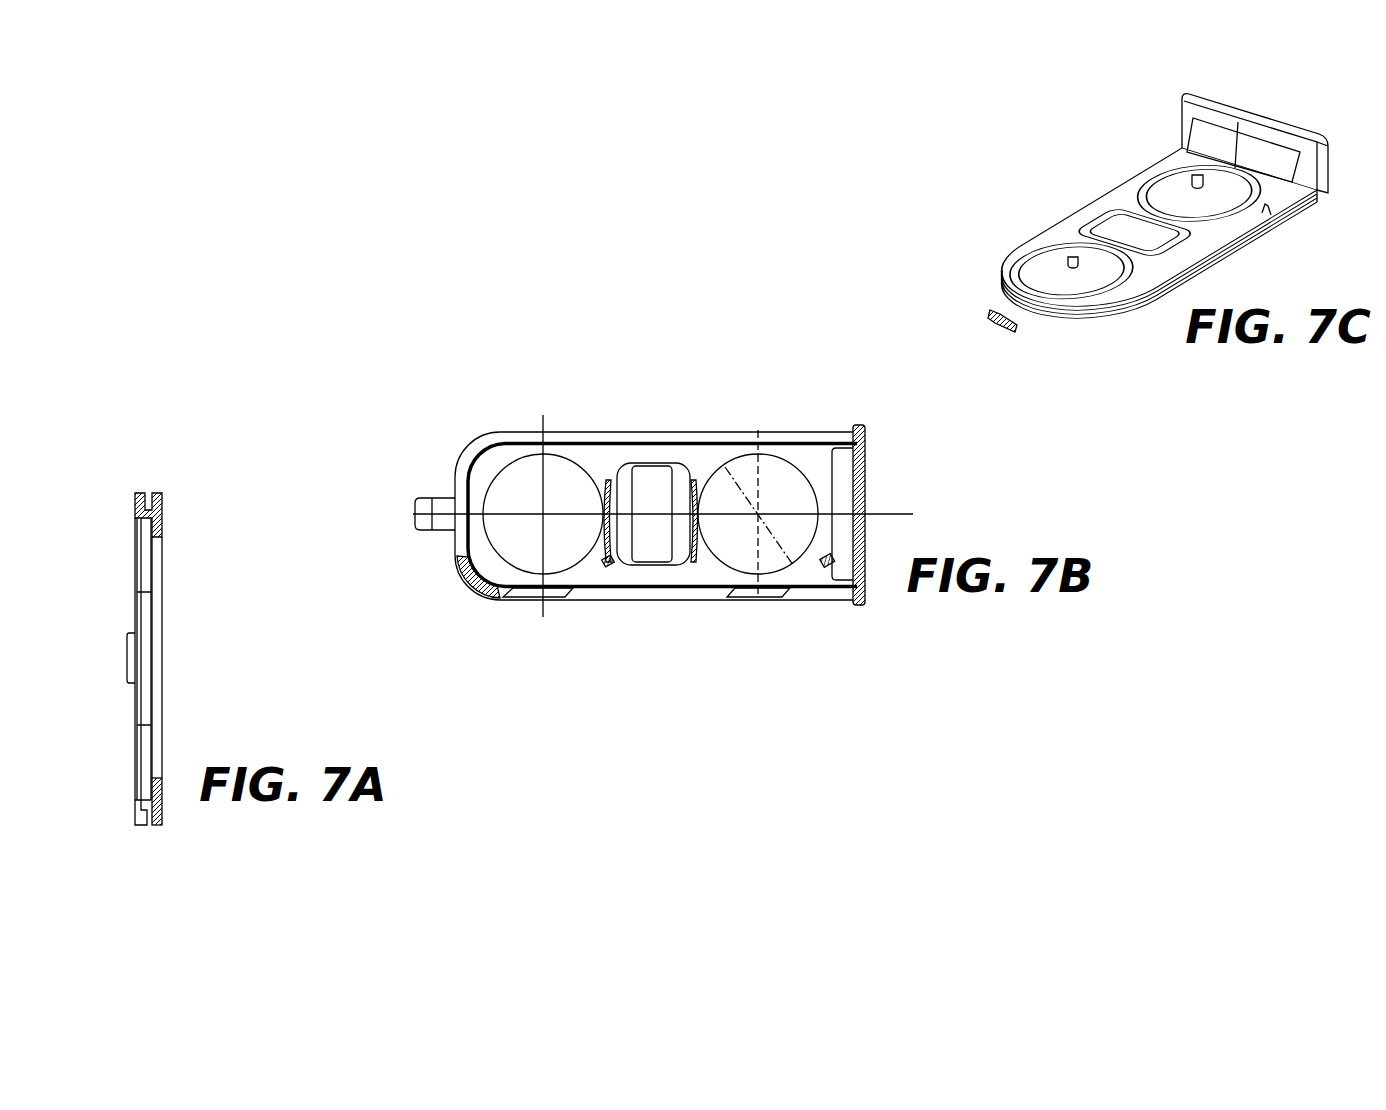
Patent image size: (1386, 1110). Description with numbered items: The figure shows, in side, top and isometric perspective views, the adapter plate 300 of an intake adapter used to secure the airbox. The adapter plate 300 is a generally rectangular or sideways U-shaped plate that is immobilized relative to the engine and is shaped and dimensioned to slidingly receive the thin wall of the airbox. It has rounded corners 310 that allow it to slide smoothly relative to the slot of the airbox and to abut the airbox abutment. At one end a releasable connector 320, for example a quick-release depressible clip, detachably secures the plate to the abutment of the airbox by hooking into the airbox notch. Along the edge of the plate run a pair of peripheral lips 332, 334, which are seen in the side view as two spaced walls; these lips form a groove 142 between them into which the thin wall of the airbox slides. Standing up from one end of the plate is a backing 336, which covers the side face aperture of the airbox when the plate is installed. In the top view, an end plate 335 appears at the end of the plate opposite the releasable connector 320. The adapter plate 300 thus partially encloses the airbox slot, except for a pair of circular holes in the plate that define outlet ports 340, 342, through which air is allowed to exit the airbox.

In FIG. 7A, the groove 142 is at (148, 488).
In FIG. 7A, the adapter plate 300 is at (192, 622).
In FIG. 7B, the adapter plate 300 is at (658, 418).
In FIG. 7C, the adapter plate 300 is at (1074, 176).
In FIG. 7B, the rounded corners 310 is at (472, 443).
In FIG. 7C, the rounded corners 310 is at (972, 283).
In FIG. 7B, the releasable connector 320 is at (420, 500).
In FIG. 7C, the releasable connector 320 is at (1003, 330).
In FIG. 7A, the peripheral lip 332 is at (135, 495).
In FIG. 7C, the peripheral lip 332 is at (1270, 220).
In FIG. 7A, the peripheral lip 334 is at (162, 503).
In FIG. 7C, the peripheral lip 334 is at (1232, 249).
In FIG. 7B, the end plate 335 is at (858, 463).
In FIG. 7C, the backing 336 is at (1240, 113).
In FIG. 7B, the outlet port 340 is at (523, 524).
In FIG. 7C, the outlet port 340 is at (1053, 277).
In FIG. 7B, the outlet port 342 is at (738, 524).
In FIG. 7C, the outlet port 342 is at (1173, 193).